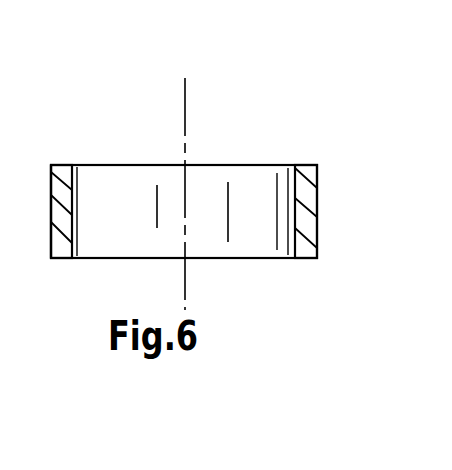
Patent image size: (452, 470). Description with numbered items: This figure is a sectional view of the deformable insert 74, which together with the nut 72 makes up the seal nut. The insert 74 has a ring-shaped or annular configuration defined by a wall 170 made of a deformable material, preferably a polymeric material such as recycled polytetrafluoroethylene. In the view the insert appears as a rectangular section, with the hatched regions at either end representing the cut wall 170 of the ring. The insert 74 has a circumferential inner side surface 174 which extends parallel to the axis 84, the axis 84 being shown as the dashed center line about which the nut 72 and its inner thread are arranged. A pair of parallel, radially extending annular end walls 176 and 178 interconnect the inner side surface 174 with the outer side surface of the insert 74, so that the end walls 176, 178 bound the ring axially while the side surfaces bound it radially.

The deformable insert 74 is at (228, 104).
The wall 170 is at (63, 165).
The circumferential inner side surface 174 is at (76, 199).
The annular end wall 176 is at (300, 165).
The annular end wall 178 is at (305, 258).
The nut 72 is at (52, 229).
The axis 84 is at (185, 283).